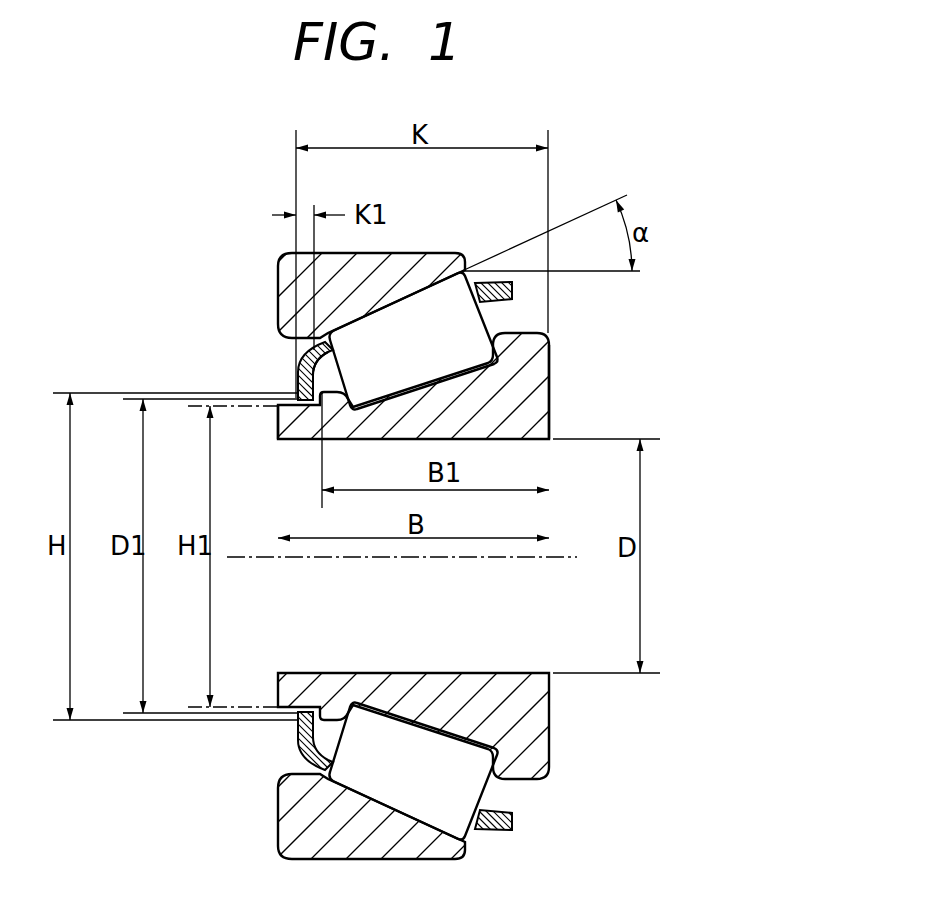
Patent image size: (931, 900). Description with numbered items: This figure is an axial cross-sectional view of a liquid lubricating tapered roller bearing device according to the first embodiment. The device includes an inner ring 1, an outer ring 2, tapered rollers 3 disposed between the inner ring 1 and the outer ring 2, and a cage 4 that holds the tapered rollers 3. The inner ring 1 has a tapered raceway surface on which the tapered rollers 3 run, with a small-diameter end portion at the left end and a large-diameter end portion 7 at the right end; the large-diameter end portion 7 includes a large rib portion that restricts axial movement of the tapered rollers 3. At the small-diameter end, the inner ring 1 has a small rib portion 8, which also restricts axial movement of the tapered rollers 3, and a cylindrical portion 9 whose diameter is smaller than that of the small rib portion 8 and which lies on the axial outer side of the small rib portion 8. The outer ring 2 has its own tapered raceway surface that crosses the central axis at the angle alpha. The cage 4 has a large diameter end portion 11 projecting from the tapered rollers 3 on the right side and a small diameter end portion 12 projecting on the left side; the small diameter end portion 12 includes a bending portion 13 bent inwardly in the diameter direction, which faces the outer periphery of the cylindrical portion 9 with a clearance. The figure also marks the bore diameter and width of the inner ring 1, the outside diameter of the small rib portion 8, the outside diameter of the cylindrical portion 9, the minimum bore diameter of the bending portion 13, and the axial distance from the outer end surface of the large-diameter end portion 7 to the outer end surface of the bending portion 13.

The inner ring 1 is at (553, 413).
The outer ring 2 is at (290, 290).
The tapered rollers 3 is at (445, 307).
The cage 4 is at (490, 280).
The large-diameter end portion 7 is at (532, 370).
The small rib portion 8 is at (297, 367).
The cylindrical portion 9 is at (278, 415).
The large diameter end portion 11 is at (513, 287).
The small diameter end portion 12 is at (303, 357).
The bending portion 13 is at (297, 385).